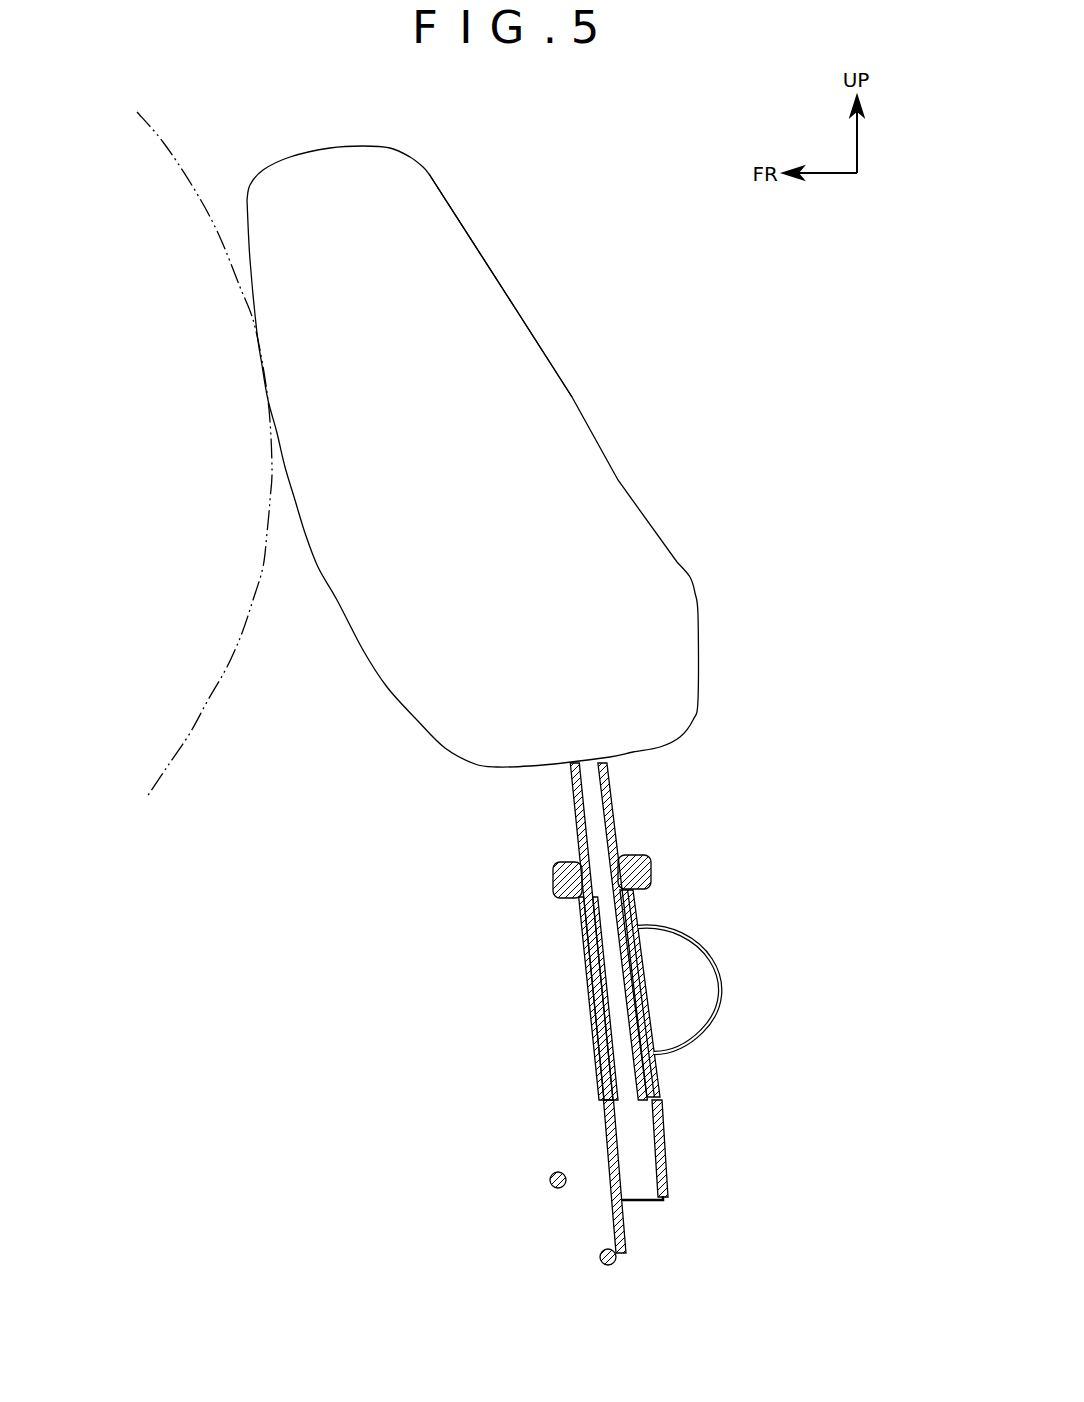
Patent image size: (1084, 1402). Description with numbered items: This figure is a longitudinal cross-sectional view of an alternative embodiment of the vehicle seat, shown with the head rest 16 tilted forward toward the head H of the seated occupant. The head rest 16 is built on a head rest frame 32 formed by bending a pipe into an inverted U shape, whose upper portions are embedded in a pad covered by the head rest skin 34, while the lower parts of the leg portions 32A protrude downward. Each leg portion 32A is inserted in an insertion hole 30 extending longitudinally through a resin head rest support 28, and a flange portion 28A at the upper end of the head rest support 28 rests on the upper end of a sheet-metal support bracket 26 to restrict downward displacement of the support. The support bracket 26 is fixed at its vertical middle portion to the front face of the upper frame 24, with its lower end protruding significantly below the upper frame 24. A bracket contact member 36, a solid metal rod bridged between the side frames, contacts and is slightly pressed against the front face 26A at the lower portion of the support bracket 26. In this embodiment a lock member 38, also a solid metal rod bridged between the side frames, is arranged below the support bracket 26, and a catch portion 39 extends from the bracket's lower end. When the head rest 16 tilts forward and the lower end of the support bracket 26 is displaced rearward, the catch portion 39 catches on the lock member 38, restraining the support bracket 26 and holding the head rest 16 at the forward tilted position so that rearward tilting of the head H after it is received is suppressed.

The head of the seated occupant H is at (153, 128).
The head rest 16 is at (519, 309).
The head rest skin 34 is at (573, 397).
The head rest frame 32 is at (573, 795).
The leg portion 32A is at (609, 795).
The flange portion 28A is at (652, 873).
The head rest support 28 is at (585, 936).
The insertion hole 30 is at (630, 1071).
The upper frame 24 is at (720, 962).
The front face 26A is at (606, 1110).
The support bracket 26 is at (668, 1128).
The bracket contact member 36 is at (550, 1180).
The catch portion 39 is at (615, 1222).
The lock member 38 is at (600, 1256).